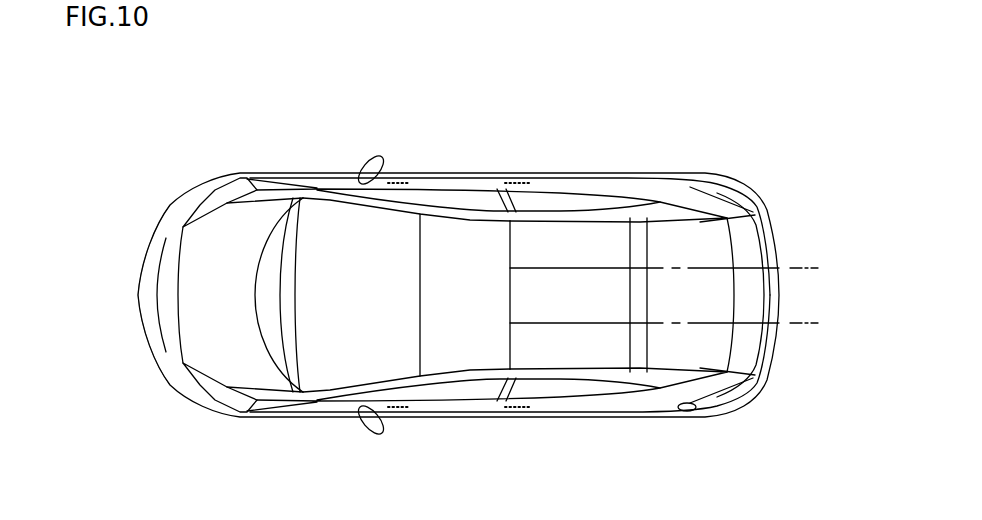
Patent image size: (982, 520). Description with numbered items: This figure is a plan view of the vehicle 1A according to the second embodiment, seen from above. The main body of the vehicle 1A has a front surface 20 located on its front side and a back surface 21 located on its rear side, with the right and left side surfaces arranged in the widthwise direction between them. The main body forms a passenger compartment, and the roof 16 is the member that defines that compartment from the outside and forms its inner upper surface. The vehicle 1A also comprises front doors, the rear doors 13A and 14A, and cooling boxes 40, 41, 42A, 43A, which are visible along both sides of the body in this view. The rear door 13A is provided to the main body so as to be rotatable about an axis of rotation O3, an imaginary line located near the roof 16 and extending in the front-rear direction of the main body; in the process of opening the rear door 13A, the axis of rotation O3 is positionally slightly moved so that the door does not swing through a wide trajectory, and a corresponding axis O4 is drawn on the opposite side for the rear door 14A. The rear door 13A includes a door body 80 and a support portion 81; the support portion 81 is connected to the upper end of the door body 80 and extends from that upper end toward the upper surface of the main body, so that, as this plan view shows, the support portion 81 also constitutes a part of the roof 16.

The vehicle 1A is at (690, 126).
The rear door 13A is at (522, 168).
The rear door 14A is at (581, 411).
The roof 16 is at (468, 354).
The front surface 20 is at (139, 297).
The back surface 21 is at (781, 300).
The cooling box 40 is at (397, 183).
The cooling box 41 is at (401, 412).
The cooling box 42A is at (521, 183).
The cooling box 43A is at (523, 412).
The door body 80 is at (578, 186).
The support portion 81 is at (616, 228).
The axis of rotation O3 is at (801, 262).
The axis O4 is at (796, 330).